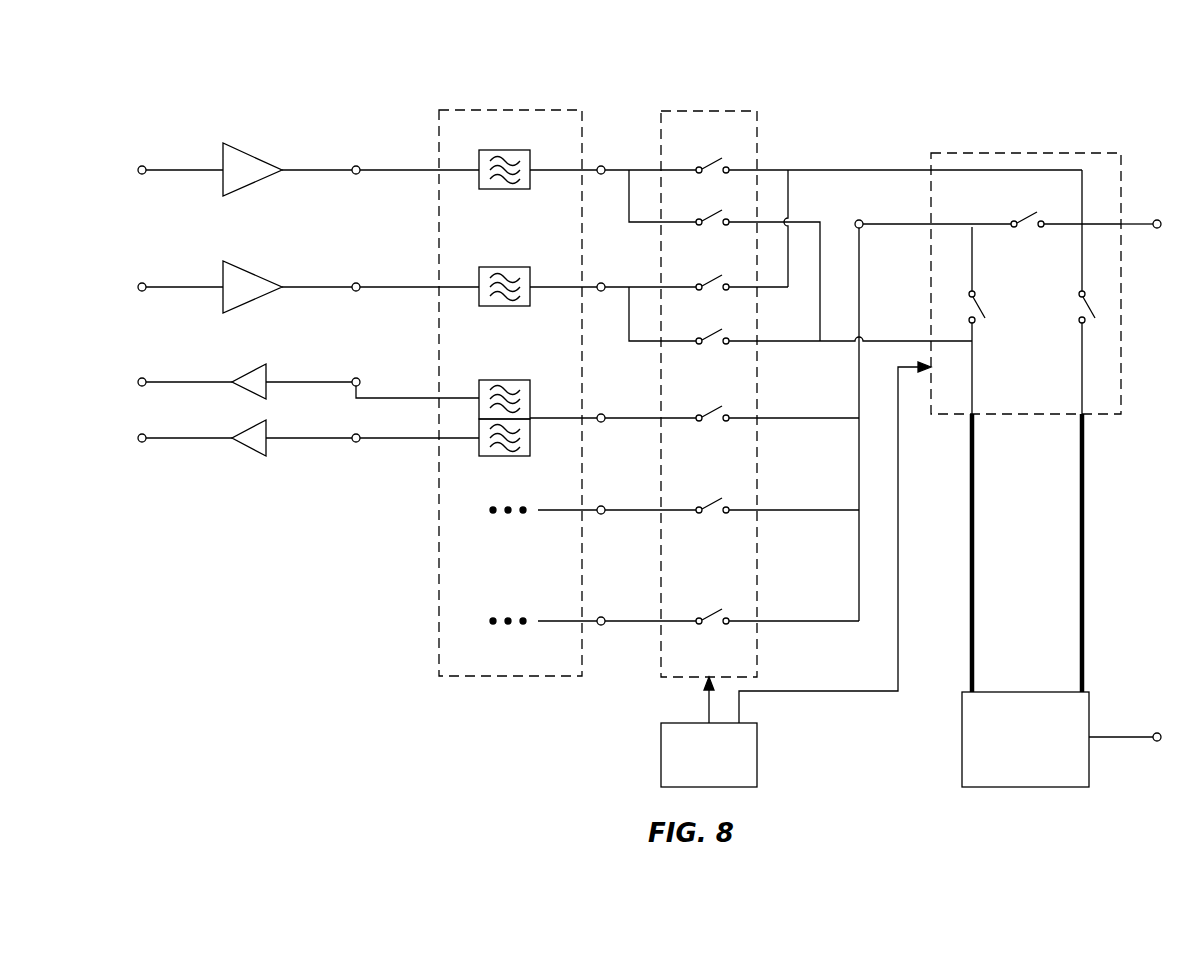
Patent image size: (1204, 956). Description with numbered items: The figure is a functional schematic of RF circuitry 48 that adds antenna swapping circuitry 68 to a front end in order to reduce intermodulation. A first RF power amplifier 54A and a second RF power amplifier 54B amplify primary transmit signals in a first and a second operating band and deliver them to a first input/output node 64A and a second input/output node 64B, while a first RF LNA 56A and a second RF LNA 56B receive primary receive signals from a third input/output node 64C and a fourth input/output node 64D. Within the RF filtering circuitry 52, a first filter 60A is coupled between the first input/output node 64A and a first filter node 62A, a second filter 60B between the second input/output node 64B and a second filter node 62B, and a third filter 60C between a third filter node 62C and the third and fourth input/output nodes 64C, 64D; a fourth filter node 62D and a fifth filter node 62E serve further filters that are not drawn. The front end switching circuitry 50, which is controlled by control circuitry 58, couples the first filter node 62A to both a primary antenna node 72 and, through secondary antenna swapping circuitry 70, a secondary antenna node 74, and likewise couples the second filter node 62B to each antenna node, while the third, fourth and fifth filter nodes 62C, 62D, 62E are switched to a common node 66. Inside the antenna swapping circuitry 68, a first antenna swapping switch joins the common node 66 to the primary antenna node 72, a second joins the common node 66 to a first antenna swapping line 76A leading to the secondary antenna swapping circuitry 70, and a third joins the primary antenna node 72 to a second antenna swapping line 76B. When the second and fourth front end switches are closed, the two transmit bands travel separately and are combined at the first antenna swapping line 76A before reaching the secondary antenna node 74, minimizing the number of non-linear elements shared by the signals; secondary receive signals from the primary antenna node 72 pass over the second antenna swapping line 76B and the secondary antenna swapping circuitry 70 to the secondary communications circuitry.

The RF circuitry 48 is at (890, 92).
The front end switching circuitry 50 is at (718, 111).
The RF filtering circuitry 52 is at (520, 110).
The first RF power amplifier 54A is at (252, 169).
The second RF power amplifier 54B is at (252, 287).
The first RF LNA 56A is at (250, 368).
The second RF LNA 56B is at (250, 424).
The control circuitry 58 is at (796, 574).
The first filter 60A is at (503, 150).
The second filter 60B is at (503, 267).
The third filter 60C is at (503, 380).
The first filter node 62A is at (604, 166).
The second filter node 62B is at (604, 283).
The third filter node 62C is at (604, 414).
The fourth filter node 62D is at (604, 506).
The fifth filter node 62E is at (604, 617).
The first input/output node 64A is at (359, 166).
The second input/output node 64B is at (359, 283).
The third input/output node 64C is at (360, 379).
The fourth input/output node 64D is at (359, 434).
The common node 66 is at (862, 220).
The antenna swapping circuitry 68 is at (1058, 153).
The secondary antenna swapping circuitry 70 is at (1025, 739).
The primary antenna node 72 is at (1160, 220).
The secondary antenna node 74 is at (1160, 733).
The first antenna swapping line 76A is at (975, 490).
The second antenna swapping line 76B is at (1085, 490).